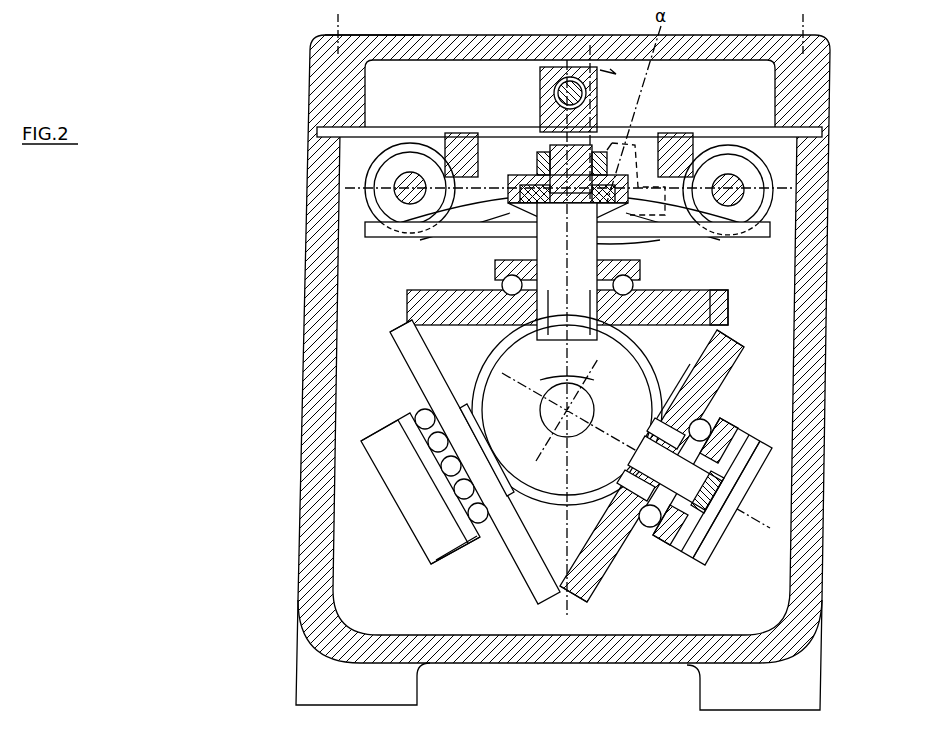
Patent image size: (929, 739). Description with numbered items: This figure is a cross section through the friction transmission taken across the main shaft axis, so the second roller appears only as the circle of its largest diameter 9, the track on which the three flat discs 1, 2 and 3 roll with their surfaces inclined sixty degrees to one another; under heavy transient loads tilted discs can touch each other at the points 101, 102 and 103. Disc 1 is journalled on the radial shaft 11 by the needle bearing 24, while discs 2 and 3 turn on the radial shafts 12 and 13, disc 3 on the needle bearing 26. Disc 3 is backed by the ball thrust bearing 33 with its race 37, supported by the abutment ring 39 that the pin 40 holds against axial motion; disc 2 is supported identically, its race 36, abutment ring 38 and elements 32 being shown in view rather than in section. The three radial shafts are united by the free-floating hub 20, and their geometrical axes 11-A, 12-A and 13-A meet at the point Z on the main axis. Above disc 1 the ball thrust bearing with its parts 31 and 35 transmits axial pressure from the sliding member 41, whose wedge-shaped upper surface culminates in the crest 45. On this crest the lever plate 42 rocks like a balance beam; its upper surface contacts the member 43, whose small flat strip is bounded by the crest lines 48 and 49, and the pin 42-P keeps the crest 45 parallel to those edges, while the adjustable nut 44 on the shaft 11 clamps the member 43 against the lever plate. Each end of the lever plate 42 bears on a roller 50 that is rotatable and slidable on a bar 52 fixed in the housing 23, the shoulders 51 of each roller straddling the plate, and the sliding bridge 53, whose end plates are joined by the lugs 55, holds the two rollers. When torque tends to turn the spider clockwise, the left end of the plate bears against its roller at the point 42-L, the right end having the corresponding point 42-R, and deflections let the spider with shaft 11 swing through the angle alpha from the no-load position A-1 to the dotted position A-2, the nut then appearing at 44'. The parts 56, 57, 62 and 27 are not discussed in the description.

The housing 23 is at (320, 632).
The cover wall 62 is at (338, 54).
The shoulders 51 is at (395, 132).
The sliding bridge 53 is at (400, 158).
The roller 50 is at (385, 188).
The bar 52 is at (395, 174).
The lugs 55 is at (462, 138).
The top bearing block 56 is at (538, 82).
The pivot pin 57 is at (553, 66).
The central no-load position A-1 is at (589, 62).
The loaded position A-2 is at (630, 87).
The crest line 48 is at (555, 222).
The adjustable nut 44 is at (612, 135).
The shoulder displaced position 44' is at (664, 133).
The crest line 49 is at (592, 232).
The crest 45 is at (527, 218).
The contact point 42-L is at (367, 213).
The right belt portion 42-R is at (755, 232).
The lever plate 42 is at (775, 245).
The upper wedge member 43 is at (455, 232).
The pin 42-P is at (640, 245).
The sliding member 41 is at (497, 262).
The needle bearing 24 is at (530, 302).
The disc 1 is at (735, 310).
The shaft 27 is at (560, 325).
The ball thrust bearing 35 is at (640, 278).
The ball thrust bearing 31 is at (636, 290).
The hub 20 is at (500, 392).
The radial shaft 11 is at (527, 345).
The disc 2 is at (412, 360).
The disc 3 is at (733, 368).
The contact point 101 is at (412, 328).
The contact point 103 is at (724, 328).
The contact point 102 is at (583, 606).
The roller track 9 is at (650, 368).
The center point Z is at (590, 403).
The geometrical axis 11-A is at (565, 374).
The radial shaft 12 is at (485, 478).
The abutment ring 38 is at (475, 445).
The thrust bearing race 36 is at (466, 548).
The rollers 32 is at (485, 532).
The geometrical axis 12-A is at (512, 438).
The pin 40 is at (705, 542).
The thrust bearing race 37 is at (728, 425).
The radial shaft 13 is at (745, 495).
The abutment ring 39 is at (762, 450).
The geometrical axis 13-A is at (631, 459).
The needle bearing 26 is at (705, 420).
The ball thrust bearing 33 is at (648, 528).